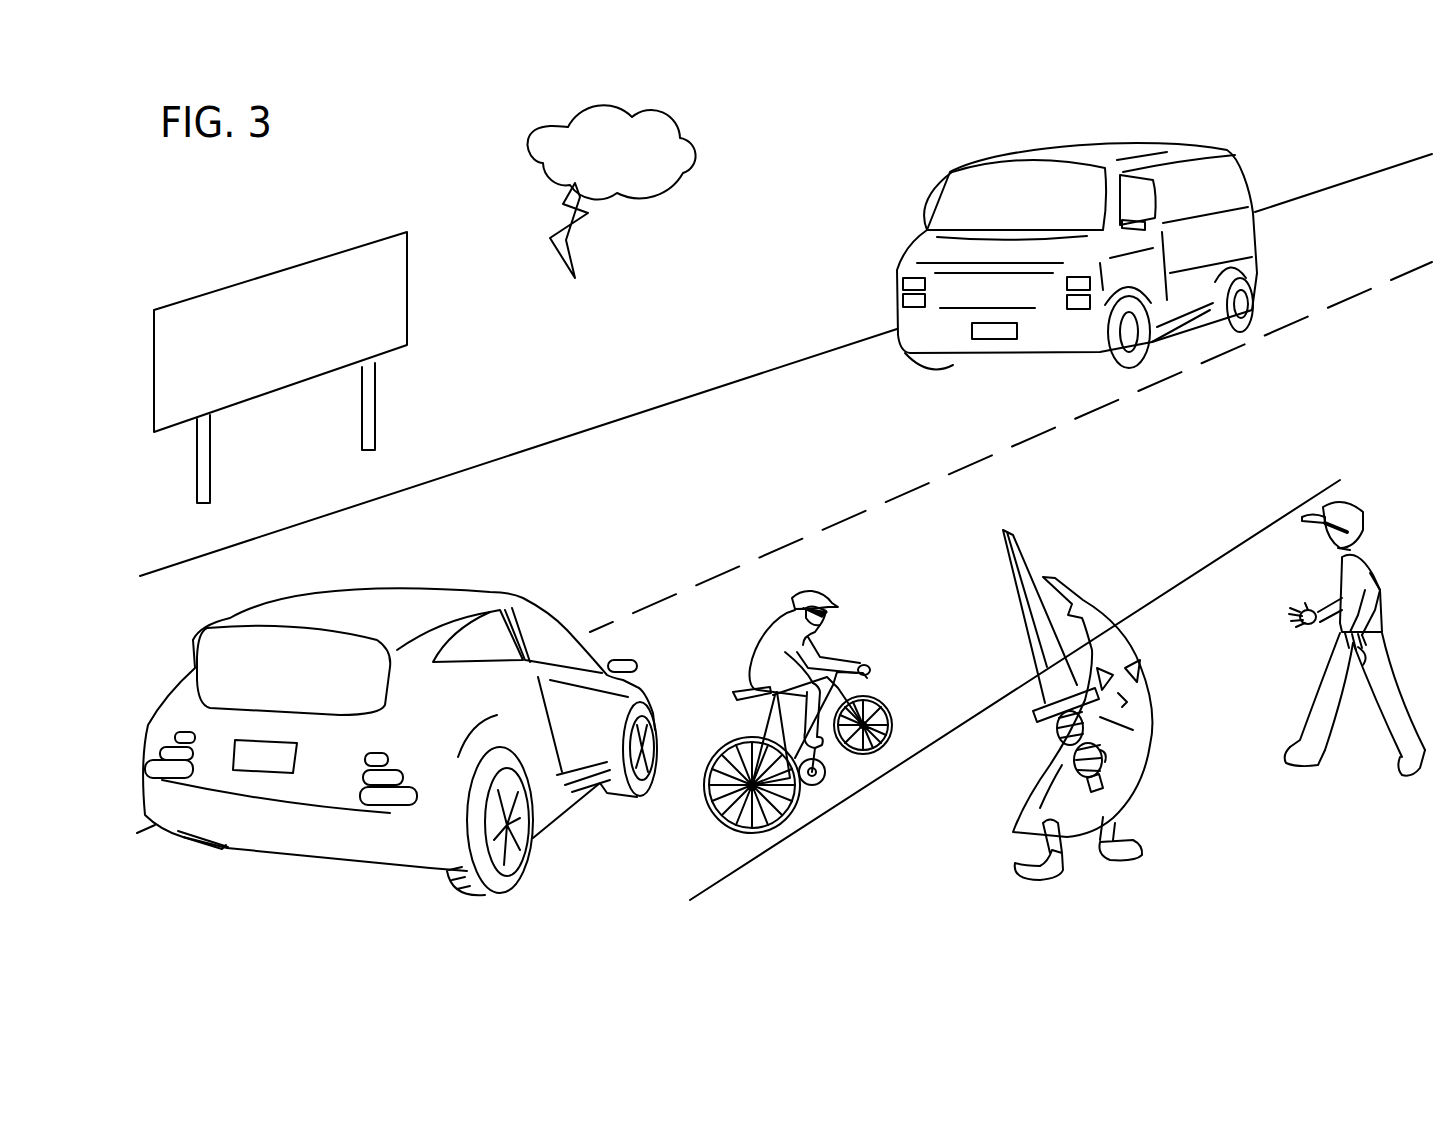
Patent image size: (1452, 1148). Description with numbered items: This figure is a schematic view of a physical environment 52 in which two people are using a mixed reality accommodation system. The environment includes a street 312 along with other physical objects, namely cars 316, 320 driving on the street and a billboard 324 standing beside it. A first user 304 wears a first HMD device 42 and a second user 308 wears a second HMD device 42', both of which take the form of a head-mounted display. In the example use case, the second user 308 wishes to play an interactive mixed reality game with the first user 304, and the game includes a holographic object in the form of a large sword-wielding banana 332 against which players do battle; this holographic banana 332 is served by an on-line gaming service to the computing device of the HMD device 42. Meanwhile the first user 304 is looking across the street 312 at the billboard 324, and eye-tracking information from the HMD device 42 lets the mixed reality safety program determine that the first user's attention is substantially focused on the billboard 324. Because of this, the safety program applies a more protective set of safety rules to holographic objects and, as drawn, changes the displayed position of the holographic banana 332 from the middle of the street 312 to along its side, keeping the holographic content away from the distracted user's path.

The street 312 is at (408, 510).
The physical environment 52 is at (828, 185).
The billboard sign 324 is at (235, 283).
The car 316 is at (1112, 150).
The car 320 is at (352, 607).
The second user 308 is at (757, 640).
The second HMD device 42' is at (835, 626).
The holographic banana 332 is at (1157, 712).
The first user 304 is at (1377, 577).
The first HMD device 42 is at (1320, 547).